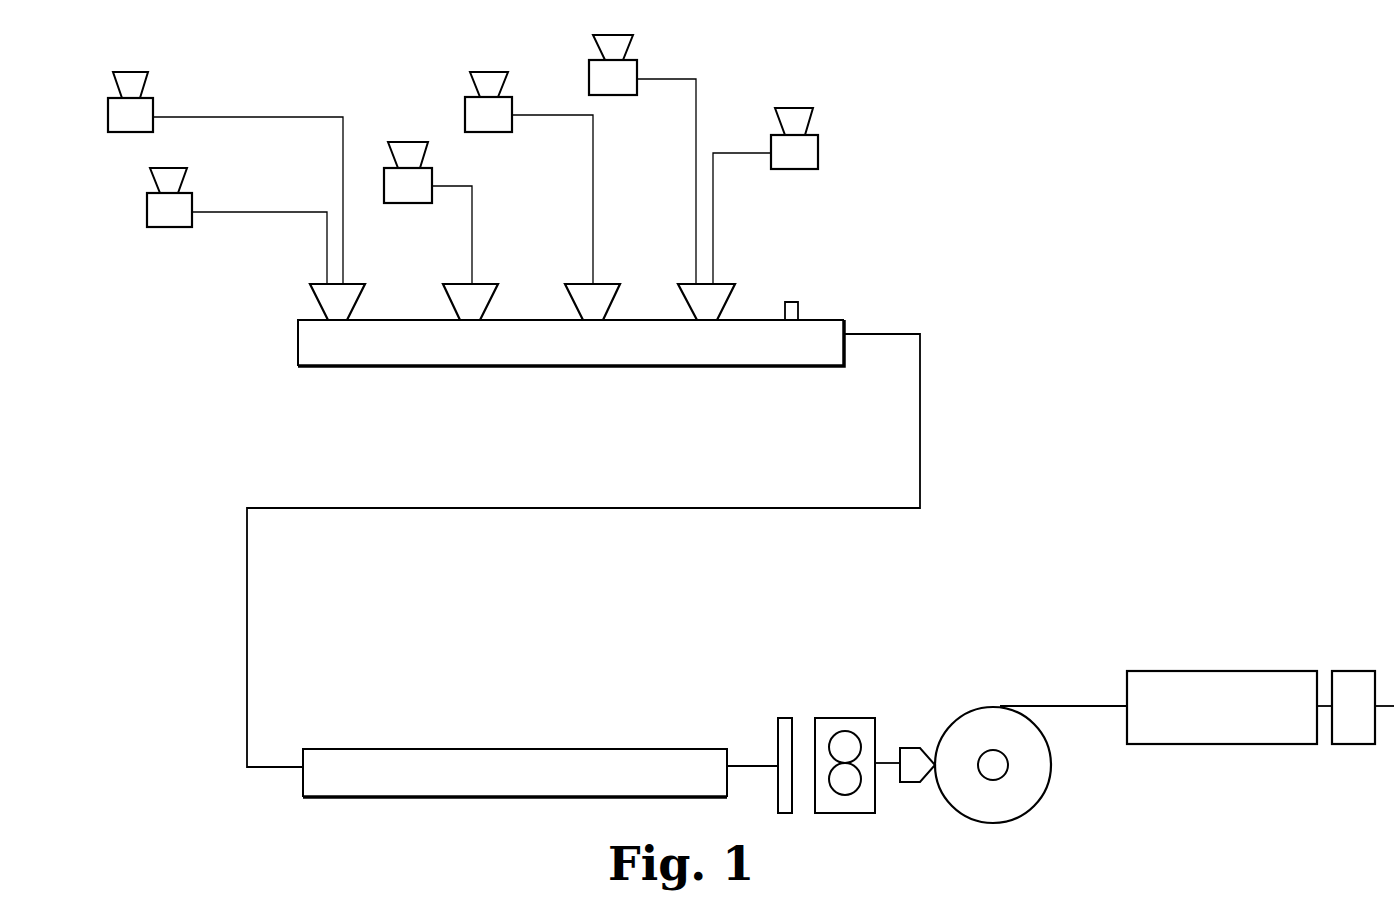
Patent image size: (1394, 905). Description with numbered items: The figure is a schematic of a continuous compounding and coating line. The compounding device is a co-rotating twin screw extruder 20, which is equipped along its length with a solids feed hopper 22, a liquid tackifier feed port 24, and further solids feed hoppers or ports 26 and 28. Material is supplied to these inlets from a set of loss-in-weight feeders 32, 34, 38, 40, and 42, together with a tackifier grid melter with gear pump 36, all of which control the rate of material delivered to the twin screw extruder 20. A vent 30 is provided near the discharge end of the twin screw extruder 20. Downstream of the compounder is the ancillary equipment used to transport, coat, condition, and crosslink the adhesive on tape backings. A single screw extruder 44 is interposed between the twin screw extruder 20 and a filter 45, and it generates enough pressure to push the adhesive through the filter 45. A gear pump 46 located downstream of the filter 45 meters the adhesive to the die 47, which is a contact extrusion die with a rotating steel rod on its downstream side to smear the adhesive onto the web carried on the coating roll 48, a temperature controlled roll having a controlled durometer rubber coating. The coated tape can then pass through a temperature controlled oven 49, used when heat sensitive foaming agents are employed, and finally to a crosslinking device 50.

The co-rotating twin screw extruder 20 is at (412, 348).
The solids feed hopper 22 is at (328, 299).
The liquid tackifier feed port 24 is at (470, 297).
The solids feed hopper or port 26 is at (587, 298).
The solids feed hopper or port 28 is at (703, 298).
The vent 30 is at (795, 312).
The loss-in-weight feeder 32 is at (163, 218).
The loss-in-weight feeder 34 is at (140, 110).
The tackifier grid melter with gear pump 36 is at (420, 173).
The loss-in-weight feeder 38 is at (497, 108).
The loss-in-weight feeder 40 is at (622, 70).
The loss-in-weight feeder 42 is at (803, 150).
The single screw extruder 44 is at (569, 768).
The filter 45 is at (785, 813).
The gear pump 46 is at (855, 808).
The die 47 is at (912, 748).
The coating roll 48 is at (1027, 788).
The temperature controlled oven 49 is at (1228, 727).
The crosslinking device 50 is at (1350, 727).